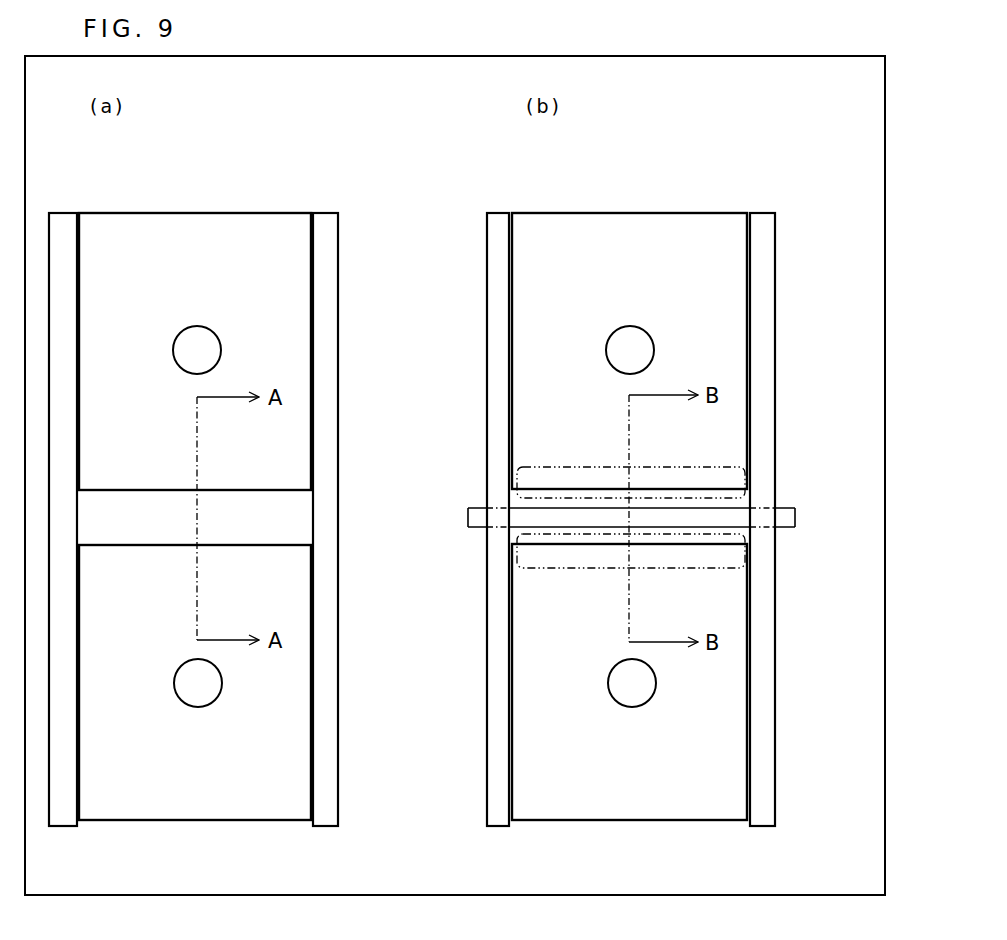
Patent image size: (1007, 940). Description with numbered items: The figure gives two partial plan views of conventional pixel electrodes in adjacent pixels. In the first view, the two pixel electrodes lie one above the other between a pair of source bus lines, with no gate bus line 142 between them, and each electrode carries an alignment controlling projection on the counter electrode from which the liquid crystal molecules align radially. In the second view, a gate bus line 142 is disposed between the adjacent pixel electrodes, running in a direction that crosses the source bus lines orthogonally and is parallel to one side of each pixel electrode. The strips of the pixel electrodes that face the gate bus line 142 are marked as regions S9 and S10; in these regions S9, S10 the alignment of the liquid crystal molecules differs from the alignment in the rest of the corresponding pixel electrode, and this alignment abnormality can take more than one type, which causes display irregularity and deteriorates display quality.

The gate bus line 142 is at (790, 517).
The region S10 is at (722, 465).
The region S9 is at (722, 571).